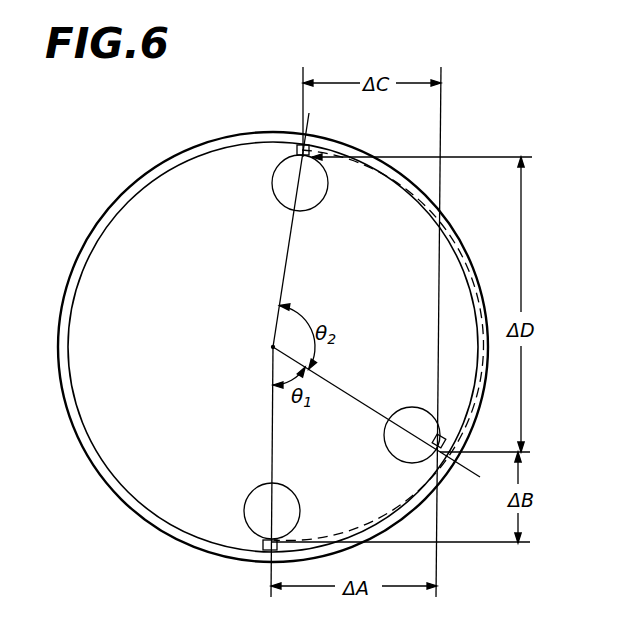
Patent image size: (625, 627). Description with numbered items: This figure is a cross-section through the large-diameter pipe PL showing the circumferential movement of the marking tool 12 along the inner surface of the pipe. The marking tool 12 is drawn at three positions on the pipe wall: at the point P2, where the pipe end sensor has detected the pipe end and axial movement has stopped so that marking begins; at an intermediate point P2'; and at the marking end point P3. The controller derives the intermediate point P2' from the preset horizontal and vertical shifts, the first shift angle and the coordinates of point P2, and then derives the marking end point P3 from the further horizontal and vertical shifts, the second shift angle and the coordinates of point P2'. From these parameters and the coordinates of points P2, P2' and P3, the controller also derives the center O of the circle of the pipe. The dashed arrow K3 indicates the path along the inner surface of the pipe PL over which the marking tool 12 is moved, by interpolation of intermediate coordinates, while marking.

The marking tool 12 is at (314, 211).
The large-diameter pipe PL is at (221, 134).
The arrow K3 (circumferential marking path) K3 is at (418, 218).
The center of the circle of the pipe O is at (367, 355).
The marking end point P3 is at (192, 189).
The point P2 (marking start point) P2 is at (242, 573).
The intermediate point P2' is at (470, 429).